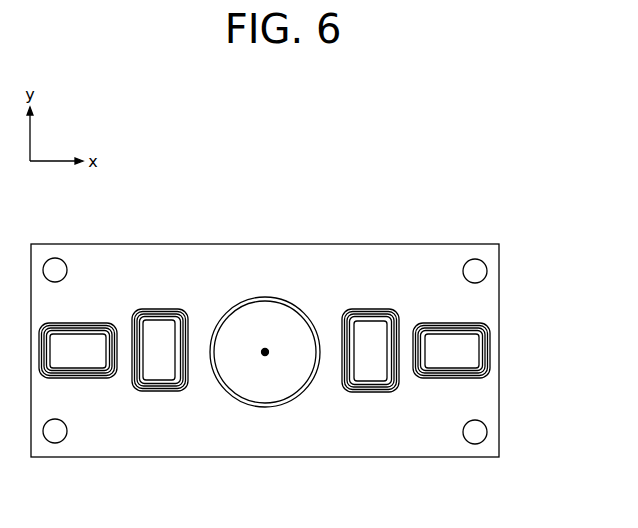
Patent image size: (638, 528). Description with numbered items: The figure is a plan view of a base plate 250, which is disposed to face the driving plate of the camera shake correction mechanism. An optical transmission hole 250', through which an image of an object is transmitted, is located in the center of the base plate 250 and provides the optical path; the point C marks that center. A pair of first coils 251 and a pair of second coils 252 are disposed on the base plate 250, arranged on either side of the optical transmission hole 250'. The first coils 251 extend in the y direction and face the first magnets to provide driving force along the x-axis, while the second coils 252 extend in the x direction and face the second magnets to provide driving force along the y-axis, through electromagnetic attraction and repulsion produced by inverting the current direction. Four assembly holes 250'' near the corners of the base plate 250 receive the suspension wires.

The base plate 250 is at (265, 325).
The optical transmission hole 250' is at (265, 300).
The assembly holes 250'' is at (329, 351).
The first coils 251 is at (155, 391).
The second coils 252 is at (78, 378).
The center point C is at (263, 356).